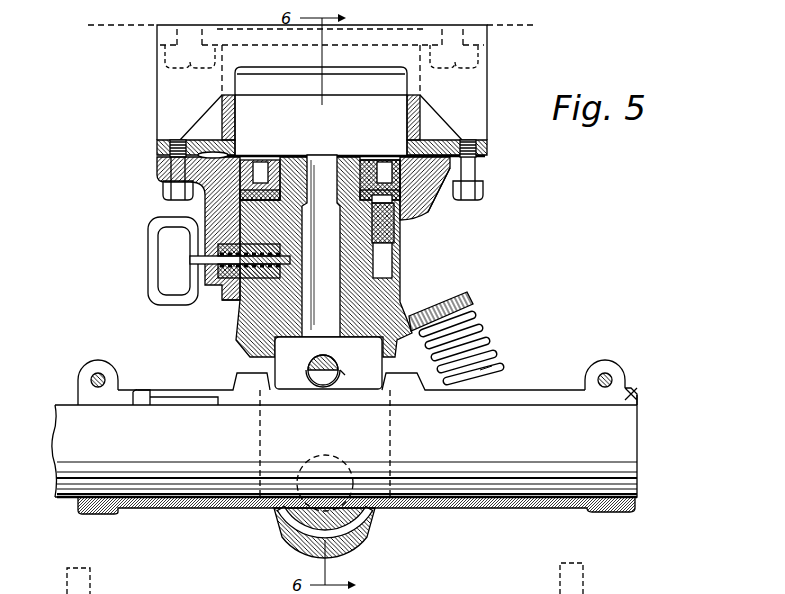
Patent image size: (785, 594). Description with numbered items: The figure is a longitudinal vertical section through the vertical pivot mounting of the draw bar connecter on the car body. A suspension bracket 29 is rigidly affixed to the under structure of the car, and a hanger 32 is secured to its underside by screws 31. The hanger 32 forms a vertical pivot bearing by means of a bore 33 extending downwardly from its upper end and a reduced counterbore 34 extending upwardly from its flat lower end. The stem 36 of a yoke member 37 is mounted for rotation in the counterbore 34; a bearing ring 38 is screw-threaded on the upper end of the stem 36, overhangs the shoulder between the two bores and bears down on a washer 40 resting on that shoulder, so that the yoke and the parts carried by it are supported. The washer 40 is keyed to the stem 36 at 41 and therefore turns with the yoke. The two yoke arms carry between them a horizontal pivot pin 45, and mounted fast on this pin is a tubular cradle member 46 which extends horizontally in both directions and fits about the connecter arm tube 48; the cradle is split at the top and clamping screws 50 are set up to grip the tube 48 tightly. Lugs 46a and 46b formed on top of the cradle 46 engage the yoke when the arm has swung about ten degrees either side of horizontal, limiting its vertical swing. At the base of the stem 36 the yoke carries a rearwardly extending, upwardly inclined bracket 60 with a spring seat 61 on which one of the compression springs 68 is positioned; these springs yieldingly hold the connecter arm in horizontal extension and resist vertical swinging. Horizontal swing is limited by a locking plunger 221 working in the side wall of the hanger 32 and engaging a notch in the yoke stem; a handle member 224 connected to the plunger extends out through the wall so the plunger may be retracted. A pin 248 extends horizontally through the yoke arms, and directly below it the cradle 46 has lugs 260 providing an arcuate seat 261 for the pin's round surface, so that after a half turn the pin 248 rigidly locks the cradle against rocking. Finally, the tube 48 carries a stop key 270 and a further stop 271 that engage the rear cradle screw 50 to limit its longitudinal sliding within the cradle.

The suspension bracket 29 is at (470, 90).
The screws 31 is at (177, 172).
The hanger 32 is at (430, 202).
The bore 33 is at (256, 162).
The counterbore 34 is at (366, 228).
The stem 36 is at (386, 282).
The yoke member 37 is at (236, 328).
The bearing ring 38 is at (280, 160).
The washer 40 is at (424, 208).
The key 41 is at (205, 208).
The horizontal pivot pin 45 is at (350, 504).
The cradle member 46 is at (250, 502).
The lug 46a is at (240, 380).
The lug 46b is at (412, 380).
The connecter arm tube 48 is at (72, 447).
The clamping screws 50 is at (92, 378).
The bracket 60 is at (450, 304).
The spring seat 61 is at (471, 333).
The compression springs 68 is at (494, 357).
The locking plunger 221 is at (238, 303).
The handle member 224 is at (150, 285).
The pin 248 is at (328, 363).
The lugs 260 is at (346, 373).
The arcuate seat 261 is at (320, 384).
The stop key 270 is at (178, 399).
The stop 271 is at (144, 396).